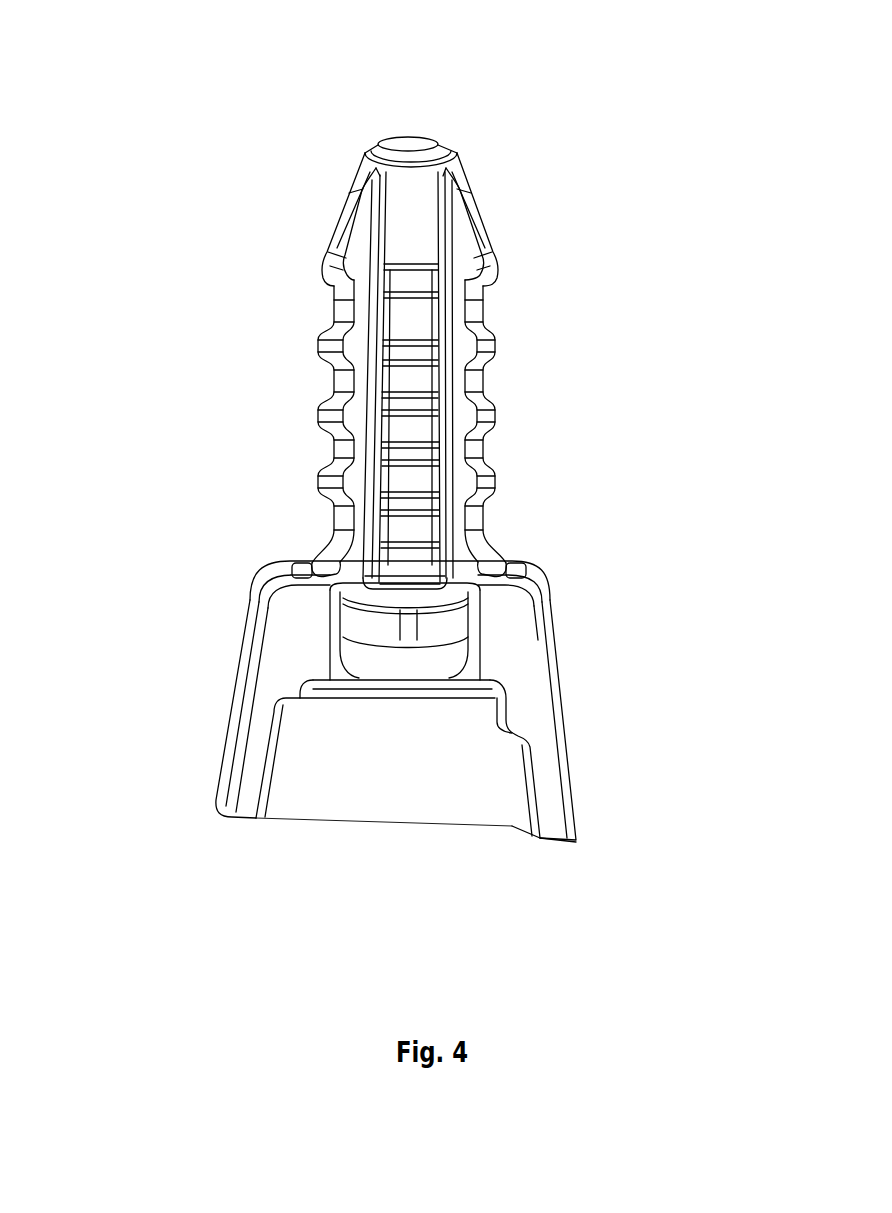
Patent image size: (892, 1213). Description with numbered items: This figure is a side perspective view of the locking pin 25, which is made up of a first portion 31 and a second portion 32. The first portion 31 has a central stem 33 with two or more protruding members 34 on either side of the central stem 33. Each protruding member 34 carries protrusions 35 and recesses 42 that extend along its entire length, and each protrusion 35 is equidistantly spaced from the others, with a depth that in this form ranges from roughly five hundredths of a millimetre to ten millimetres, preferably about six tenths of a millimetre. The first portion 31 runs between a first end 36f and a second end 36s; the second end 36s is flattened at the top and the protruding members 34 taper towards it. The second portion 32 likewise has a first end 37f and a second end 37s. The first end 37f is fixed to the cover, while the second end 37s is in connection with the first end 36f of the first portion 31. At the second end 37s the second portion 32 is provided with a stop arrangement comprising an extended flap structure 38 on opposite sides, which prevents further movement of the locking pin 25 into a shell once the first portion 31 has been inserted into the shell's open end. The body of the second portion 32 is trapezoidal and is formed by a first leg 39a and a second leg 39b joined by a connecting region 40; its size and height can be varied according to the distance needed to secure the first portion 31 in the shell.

The locking pin 25 is at (252, 647).
The first portion 31 is at (653, 150).
The second portion 32 is at (650, 577).
The central stem 33 is at (410, 176).
The protruding member 34 is at (342, 216).
The protrusion 35 is at (318, 478).
The second end 36s is at (496, 164).
The first end 36f is at (420, 576).
The second end 37s is at (418, 594).
The first end 37f is at (515, 831).
The flap structure 38 is at (438, 604).
The first leg 39a is at (268, 750).
The second leg 39b is at (567, 753).
The connecting region 40 is at (408, 769).
The recess 42 is at (492, 448).